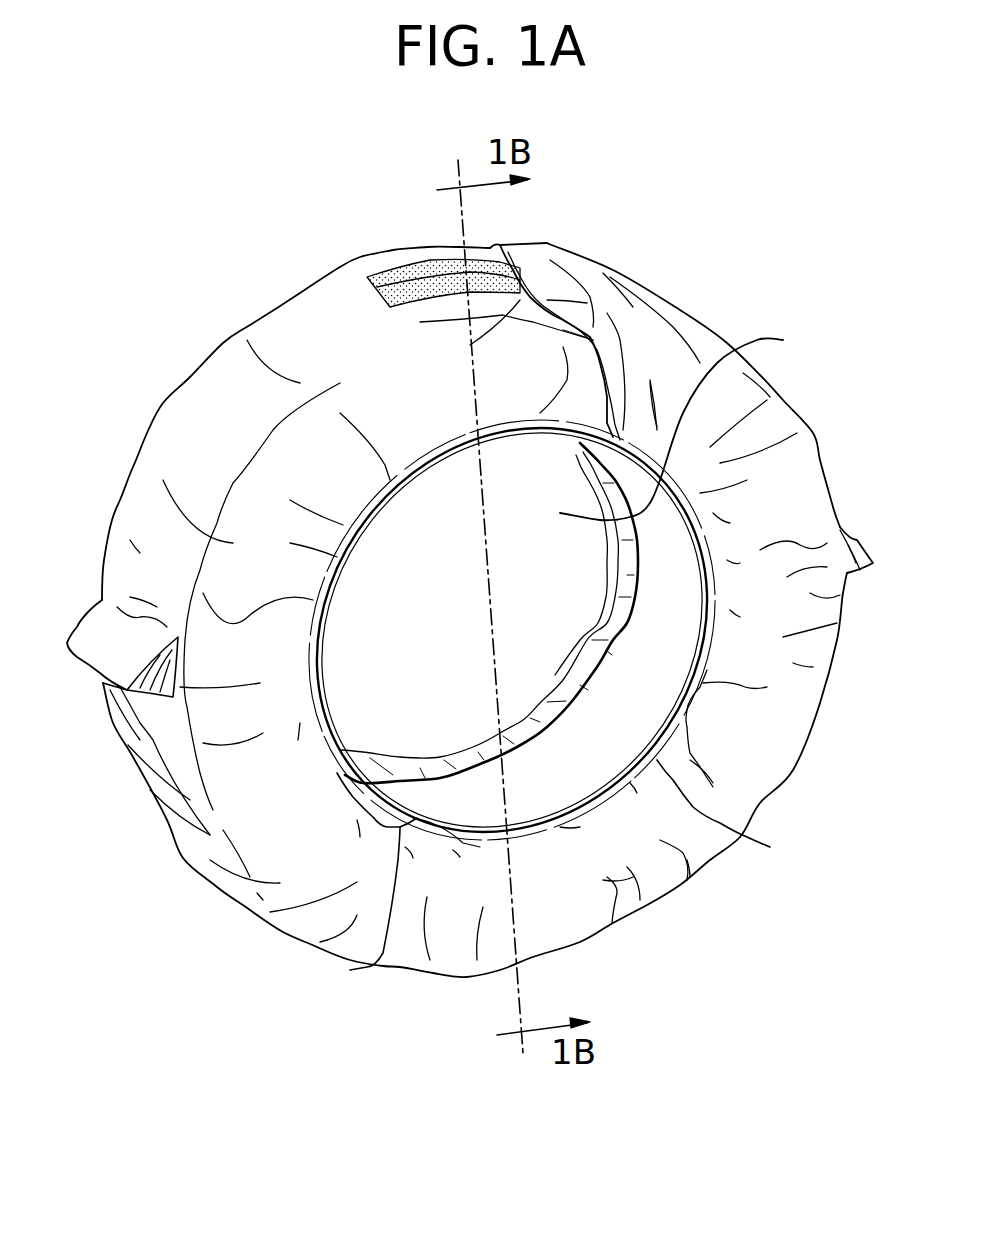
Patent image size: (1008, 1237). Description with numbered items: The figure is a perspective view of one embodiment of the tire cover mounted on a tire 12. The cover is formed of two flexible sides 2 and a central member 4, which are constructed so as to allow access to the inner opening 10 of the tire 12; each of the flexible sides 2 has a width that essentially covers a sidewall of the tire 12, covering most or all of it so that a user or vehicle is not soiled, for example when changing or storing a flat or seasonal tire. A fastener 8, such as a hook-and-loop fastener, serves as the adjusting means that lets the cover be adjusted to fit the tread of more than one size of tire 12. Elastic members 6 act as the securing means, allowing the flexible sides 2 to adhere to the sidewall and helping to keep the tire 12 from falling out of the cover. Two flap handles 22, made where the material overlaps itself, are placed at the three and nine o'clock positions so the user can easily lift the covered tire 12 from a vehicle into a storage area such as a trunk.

The flexible sides 2 is at (842, 594).
The central member 4 is at (140, 573).
The elastic members 6 is at (770, 847).
The fastener 8 is at (515, 263).
The inner opening 10 is at (526, 623).
The tire 12 is at (383, 953).
The flap handles 22 is at (107, 648).